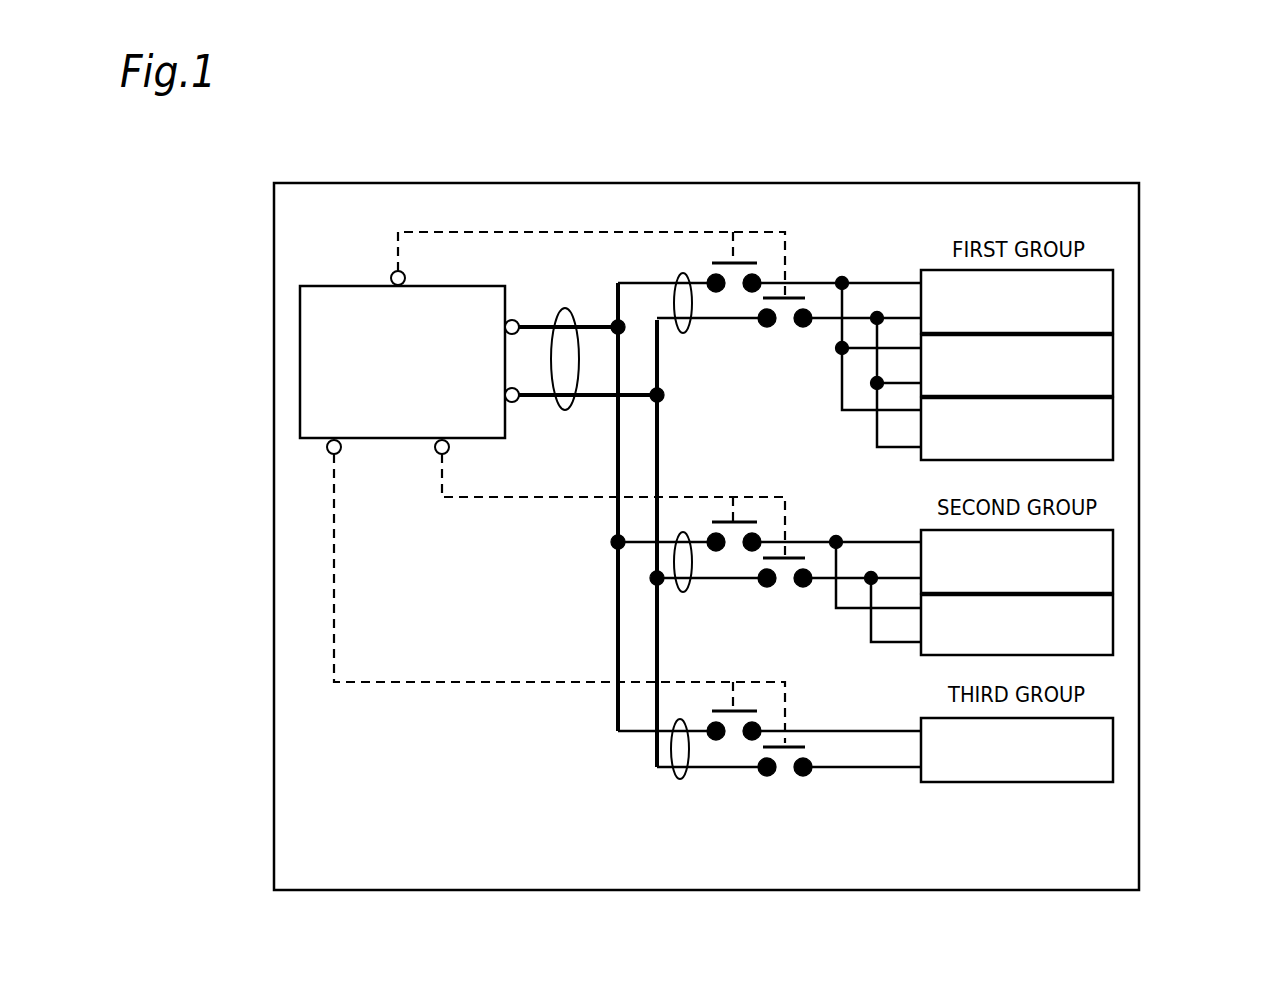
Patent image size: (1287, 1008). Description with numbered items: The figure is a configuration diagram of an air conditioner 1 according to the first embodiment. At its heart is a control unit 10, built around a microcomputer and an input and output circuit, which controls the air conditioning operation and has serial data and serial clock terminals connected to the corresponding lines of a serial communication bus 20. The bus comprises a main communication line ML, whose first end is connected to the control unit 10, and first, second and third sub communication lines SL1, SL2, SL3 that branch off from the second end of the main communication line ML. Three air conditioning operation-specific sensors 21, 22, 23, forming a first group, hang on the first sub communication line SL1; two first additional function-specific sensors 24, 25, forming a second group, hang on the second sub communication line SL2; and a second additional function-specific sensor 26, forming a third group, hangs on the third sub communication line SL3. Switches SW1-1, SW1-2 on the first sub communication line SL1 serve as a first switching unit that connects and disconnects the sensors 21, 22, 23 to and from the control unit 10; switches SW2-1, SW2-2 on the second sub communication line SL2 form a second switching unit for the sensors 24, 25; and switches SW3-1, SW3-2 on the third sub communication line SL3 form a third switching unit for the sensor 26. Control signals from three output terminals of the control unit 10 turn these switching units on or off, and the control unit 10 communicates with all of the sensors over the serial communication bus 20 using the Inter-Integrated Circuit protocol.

The air conditioner 1 is at (840, 184).
The control unit 10 is at (348, 285).
The serial communication bus 20 is at (688, 529).
The air conditioning operation-specific sensor 21 is at (1114, 303).
The air conditioning operation-specific sensor 22 is at (1114, 365).
The air conditioning operation-specific sensor 23 is at (1114, 427).
The first additional function-specific sensor 24 is at (1114, 560).
The first additional function-specific sensor 25 is at (1114, 626).
The second additional function-specific sensor 26 is at (1114, 750).
The main communication line ML is at (560, 410).
The first sub communication line SL1 is at (685, 333).
The second sub communication line SL2 is at (685, 592).
The third sub communication line SL3 is at (683, 779).
The switch SW1-1 is at (735, 248).
The switch SW1-2 is at (778, 332).
The switch SW2-1 is at (731, 509).
The switch SW2-2 is at (778, 590).
The switch SW3-1 is at (735, 697).
The switch SW3-2 is at (778, 779).